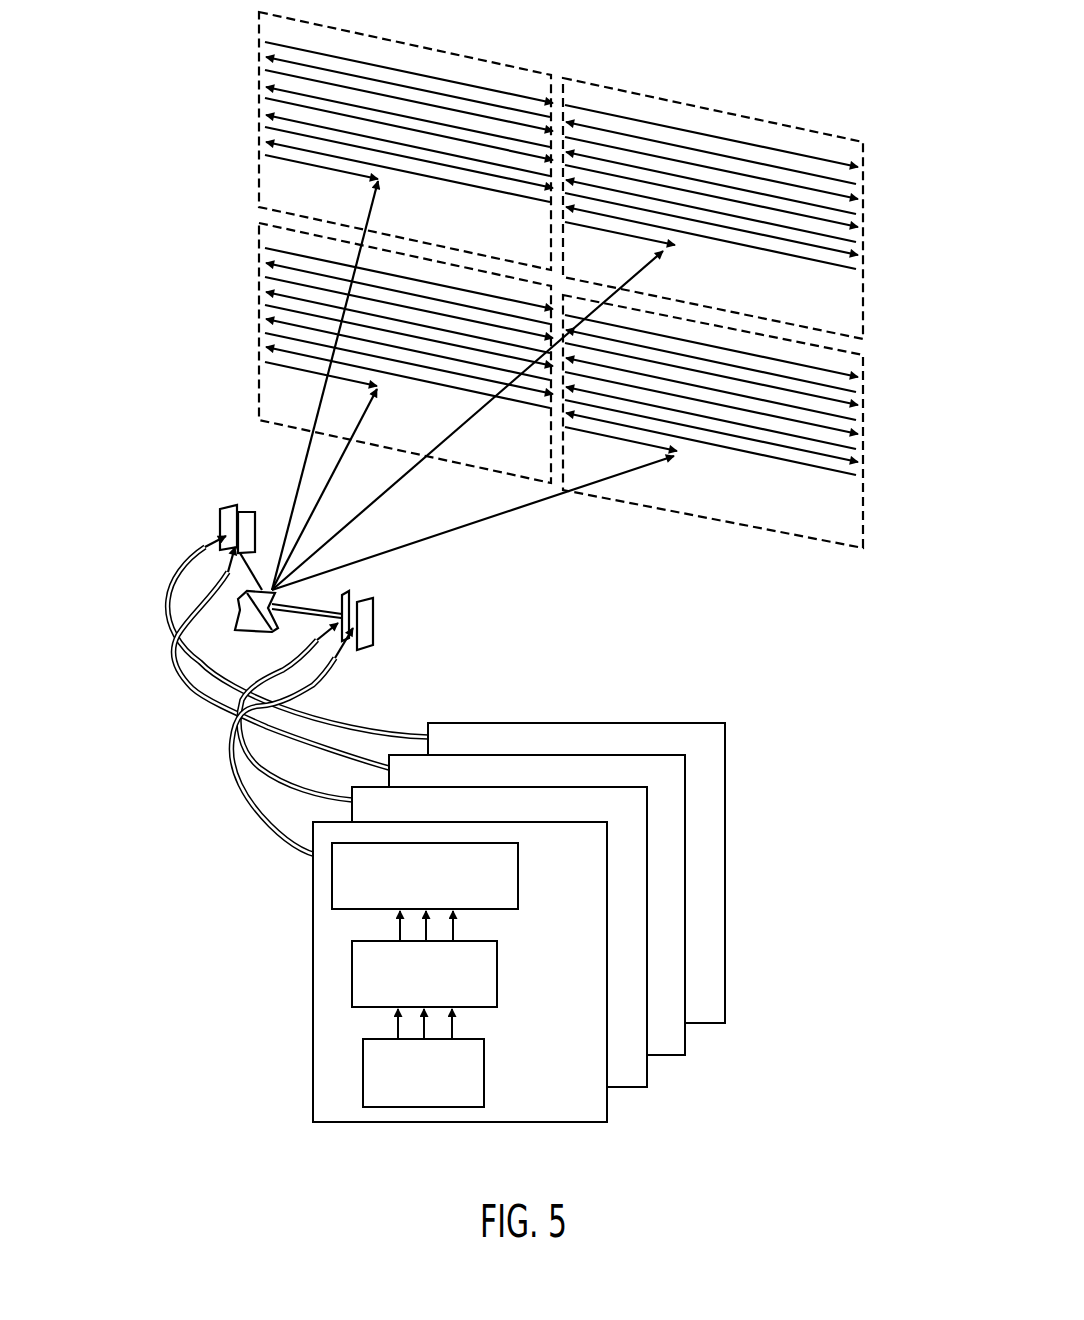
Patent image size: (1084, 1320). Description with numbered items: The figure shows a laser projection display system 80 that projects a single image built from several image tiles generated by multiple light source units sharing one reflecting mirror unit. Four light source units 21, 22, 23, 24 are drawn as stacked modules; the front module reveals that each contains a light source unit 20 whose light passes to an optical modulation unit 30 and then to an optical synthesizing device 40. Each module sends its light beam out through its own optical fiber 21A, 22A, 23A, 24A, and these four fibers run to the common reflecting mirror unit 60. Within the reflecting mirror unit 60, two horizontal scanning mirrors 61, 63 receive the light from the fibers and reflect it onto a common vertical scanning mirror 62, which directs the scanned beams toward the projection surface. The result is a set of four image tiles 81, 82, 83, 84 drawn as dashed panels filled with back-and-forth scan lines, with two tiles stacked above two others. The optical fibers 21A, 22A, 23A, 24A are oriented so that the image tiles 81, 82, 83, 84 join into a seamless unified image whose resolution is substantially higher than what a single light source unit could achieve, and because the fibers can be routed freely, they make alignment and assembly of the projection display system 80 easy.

The light source unit 20 is at (484, 1074).
The optical modulation unit 30 is at (497, 975).
The optical synthesizing device 40 is at (518, 878).
The light source unit 21 is at (540, 1123).
The light source unit 22 is at (623, 1090).
The light source unit 23 is at (665, 1058).
The light source unit 24 is at (705, 1025).
The optical fiber 21A is at (327, 701).
The optical fiber 22A is at (337, 676).
The optical fiber 23A is at (210, 597).
The optical fiber 24A is at (160, 600).
The reflecting mirror unit 60 is at (158, 473).
The horizontal scanning mirror 61 is at (378, 619).
The common vertical scanning mirror 62 is at (256, 630).
The horizontal scanning mirror 63 is at (237, 497).
The projection display system 80 is at (140, 102).
The image tile 81 is at (242, 100).
The image tile 82 is at (868, 242).
The image tile 83 is at (253, 300).
The image tile 84 is at (868, 433).